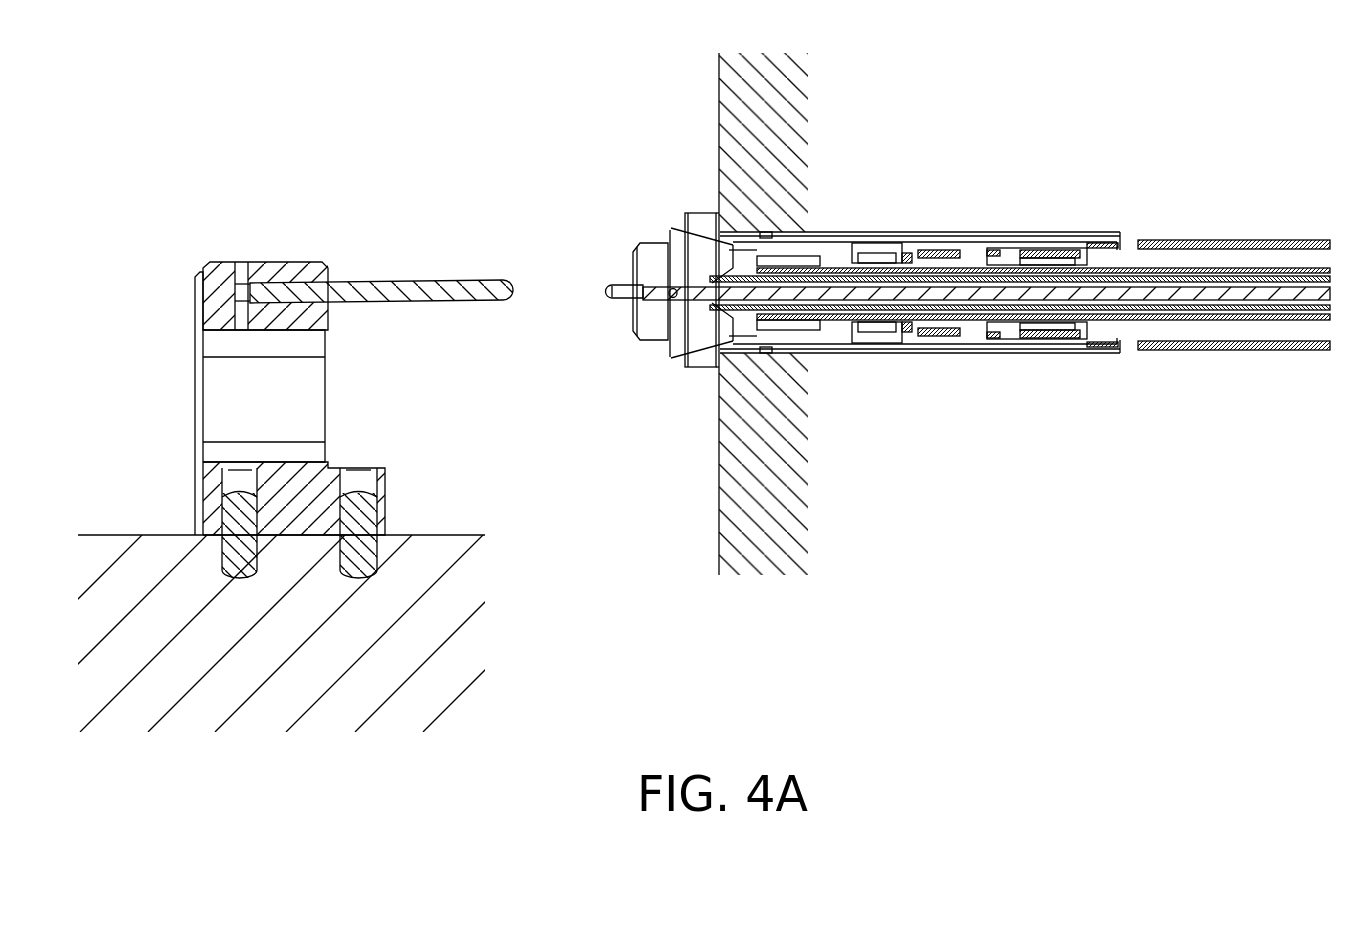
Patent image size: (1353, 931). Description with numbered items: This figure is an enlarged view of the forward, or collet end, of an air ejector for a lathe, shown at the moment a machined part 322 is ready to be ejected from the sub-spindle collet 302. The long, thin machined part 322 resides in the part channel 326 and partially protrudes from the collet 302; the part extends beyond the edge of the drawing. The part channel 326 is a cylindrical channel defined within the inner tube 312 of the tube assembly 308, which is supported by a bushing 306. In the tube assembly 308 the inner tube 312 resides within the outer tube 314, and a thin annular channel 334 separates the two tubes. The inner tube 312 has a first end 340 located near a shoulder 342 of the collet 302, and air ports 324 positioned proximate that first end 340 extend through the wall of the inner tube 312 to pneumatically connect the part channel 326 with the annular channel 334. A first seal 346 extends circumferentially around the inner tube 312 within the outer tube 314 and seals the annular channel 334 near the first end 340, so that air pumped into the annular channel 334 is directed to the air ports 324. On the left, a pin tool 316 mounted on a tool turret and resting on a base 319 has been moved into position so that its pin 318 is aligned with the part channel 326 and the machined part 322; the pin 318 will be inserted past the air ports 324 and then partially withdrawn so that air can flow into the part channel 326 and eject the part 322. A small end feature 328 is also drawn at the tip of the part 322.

The sub-spindle collet 302 is at (673, 230).
The bushing 306 is at (1033, 252).
The tube assembly 308 is at (1178, 263).
The inner tube 312 is at (1167, 320).
The outer tube 314 is at (1233, 320).
The pin tool 316 is at (195, 406).
The pin 318 is at (483, 283).
The base 319 is at (168, 535).
The machined part 322 is at (608, 286).
The air ports 324 is at (782, 278).
The part channel 326 is at (932, 300).
The shaft 328 is at (603, 294).
The annular channel 334 is at (1300, 320).
The first end 340 is at (677, 315).
The shoulder 342 is at (722, 358).
The first seal 346 is at (768, 345).